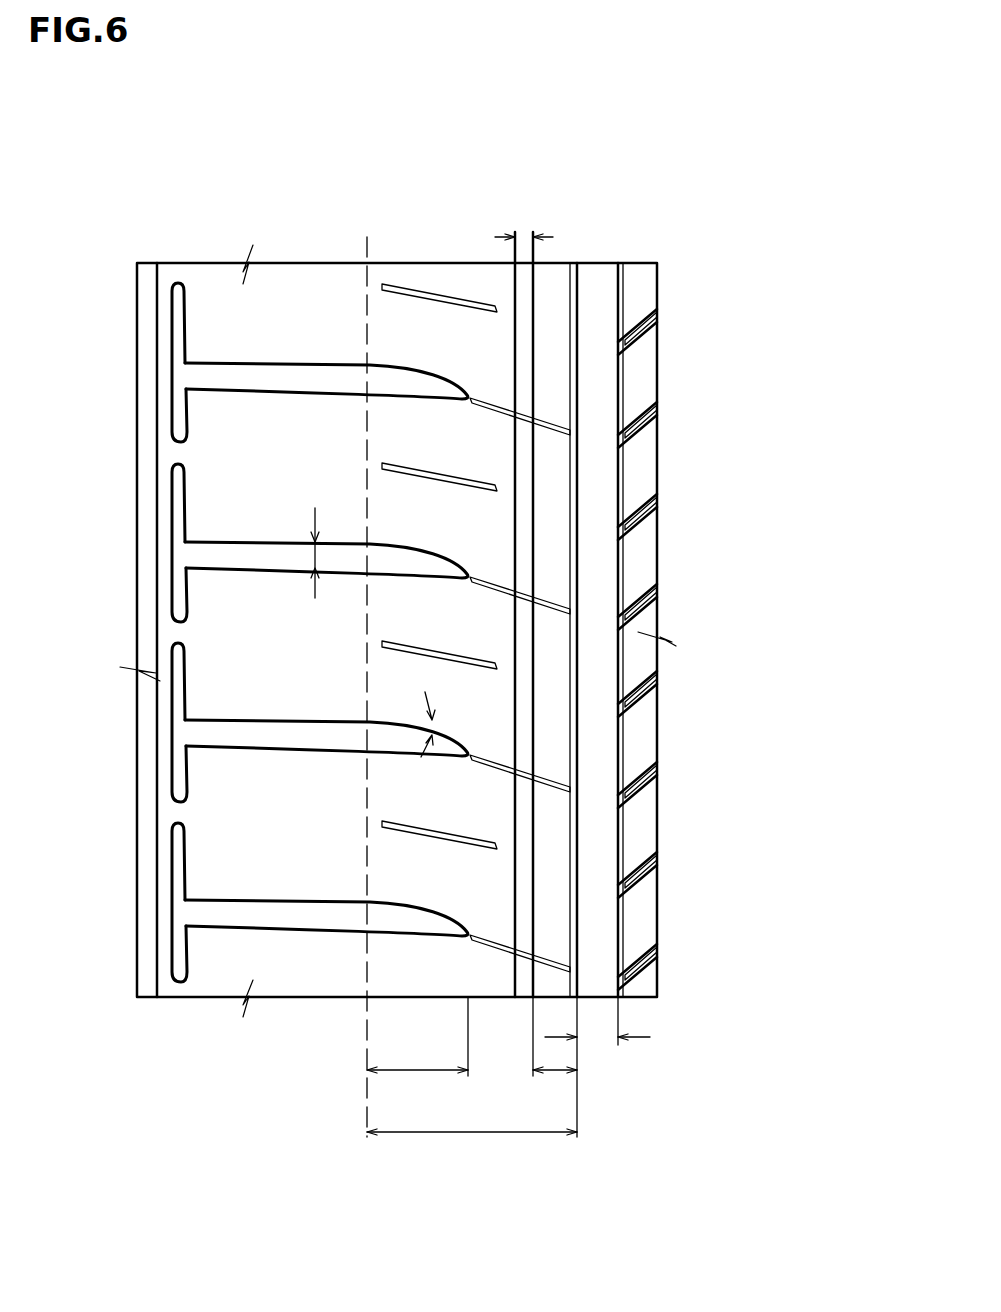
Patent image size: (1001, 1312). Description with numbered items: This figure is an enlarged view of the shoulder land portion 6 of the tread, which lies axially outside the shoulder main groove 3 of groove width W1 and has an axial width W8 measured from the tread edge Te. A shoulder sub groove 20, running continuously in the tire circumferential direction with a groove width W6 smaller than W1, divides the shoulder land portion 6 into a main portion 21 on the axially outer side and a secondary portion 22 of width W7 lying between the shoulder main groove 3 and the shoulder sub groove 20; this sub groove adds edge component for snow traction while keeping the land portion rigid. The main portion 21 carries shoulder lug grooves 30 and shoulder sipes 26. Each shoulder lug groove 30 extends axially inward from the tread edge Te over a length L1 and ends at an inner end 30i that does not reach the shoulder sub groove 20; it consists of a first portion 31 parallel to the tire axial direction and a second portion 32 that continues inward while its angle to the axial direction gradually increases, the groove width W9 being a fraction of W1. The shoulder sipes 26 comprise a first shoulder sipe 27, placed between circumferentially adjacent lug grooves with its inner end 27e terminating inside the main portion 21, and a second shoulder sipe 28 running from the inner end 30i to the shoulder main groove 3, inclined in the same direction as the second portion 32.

The shoulder main groove 3 is at (600, 293).
The shoulder land portion 6 is at (425, 170).
The shoulder sub groove 20 is at (527, 320).
The main portion 21 is at (427, 315).
The secondary portion 22 is at (557, 312).
The shoulder sipe 26 is at (418, 467).
The first shoulder sipe 27 is at (418, 648).
The inner end of first shoulder sipe 27e is at (383, 823).
The second shoulder sipe 28 is at (513, 592).
The shoulder lug groove 30 is at (335, 170).
The inner end of shoulder lug groove 30i is at (470, 577).
The first portion 31 is at (320, 373).
The second portion 32 is at (420, 380).
The tread edge Te is at (361, 673).
The groove width of shoulder sub groove W6 is at (524, 222).
The groove width of shoulder lug groove W9 is at (315, 555).
The length of shoulder lug groove L1 is at (417, 1051).
The width of secondary portion W7 is at (555, 1051).
The groove width of shoulder main groove W1 is at (597, 1034).
The width of shoulder land portion W8 is at (472, 1081).